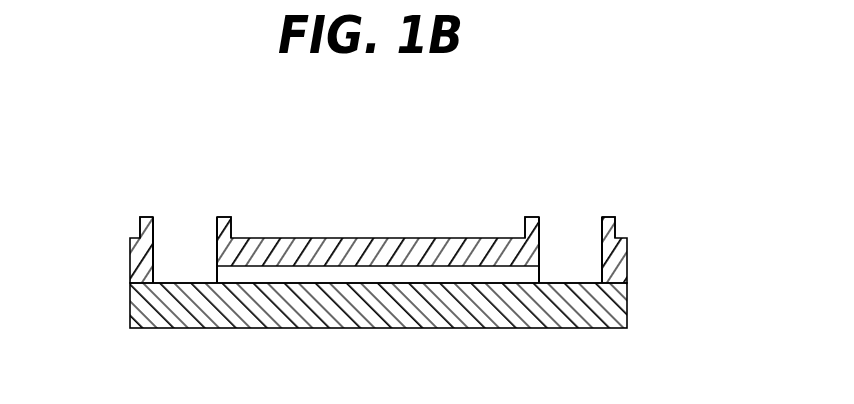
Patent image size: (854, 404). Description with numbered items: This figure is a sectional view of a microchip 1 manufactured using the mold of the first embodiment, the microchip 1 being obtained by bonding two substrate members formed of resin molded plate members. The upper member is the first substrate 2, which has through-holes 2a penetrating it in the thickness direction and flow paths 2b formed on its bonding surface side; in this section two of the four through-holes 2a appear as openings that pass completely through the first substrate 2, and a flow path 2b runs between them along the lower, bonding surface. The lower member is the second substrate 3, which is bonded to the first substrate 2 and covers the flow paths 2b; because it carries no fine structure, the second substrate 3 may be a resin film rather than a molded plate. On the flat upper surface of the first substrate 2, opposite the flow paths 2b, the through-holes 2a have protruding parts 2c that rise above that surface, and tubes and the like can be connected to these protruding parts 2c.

The microchip 1 is at (378, 243).
The first substrate 2 is at (415, 245).
The through-holes 2a is at (178, 243).
The flow paths 2b is at (326, 277).
The protruding parts 2c is at (148, 228).
The second substrate 3 is at (380, 328).